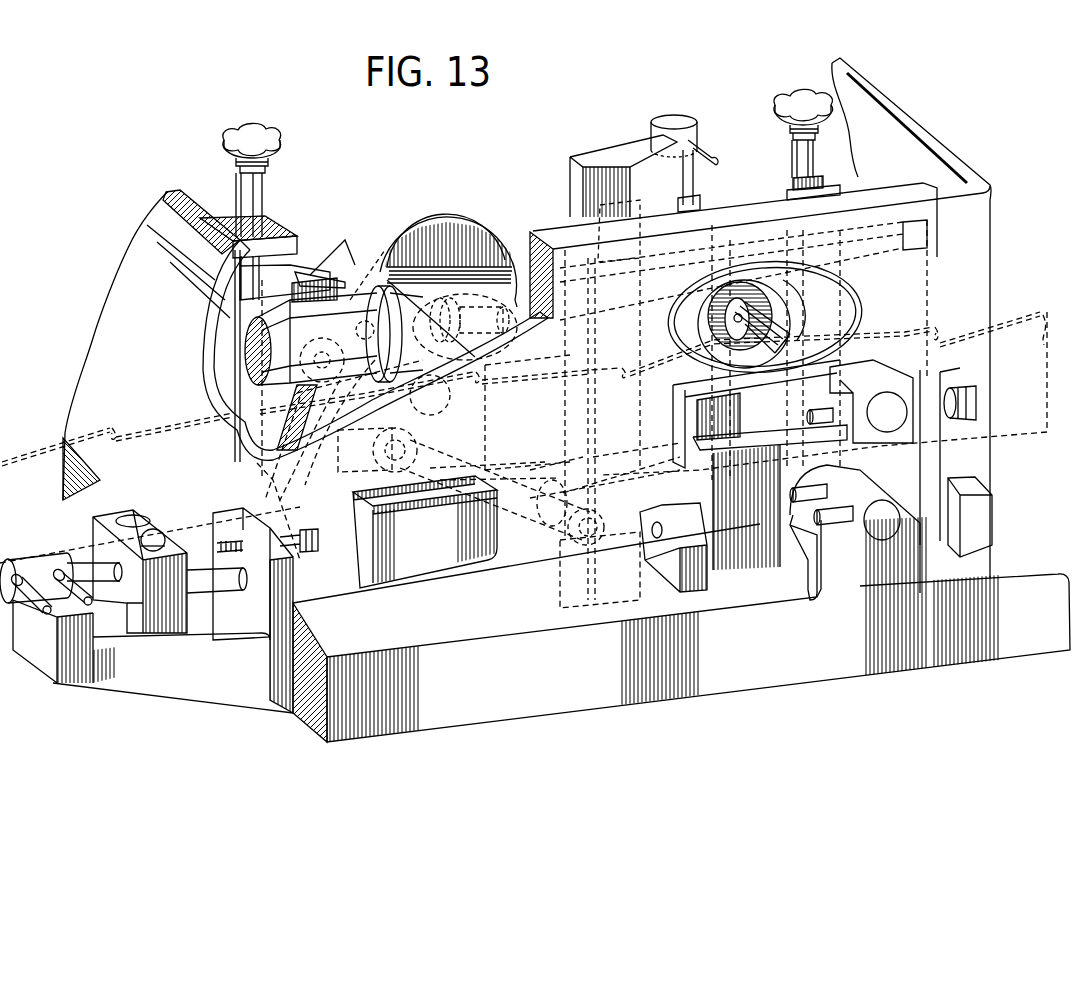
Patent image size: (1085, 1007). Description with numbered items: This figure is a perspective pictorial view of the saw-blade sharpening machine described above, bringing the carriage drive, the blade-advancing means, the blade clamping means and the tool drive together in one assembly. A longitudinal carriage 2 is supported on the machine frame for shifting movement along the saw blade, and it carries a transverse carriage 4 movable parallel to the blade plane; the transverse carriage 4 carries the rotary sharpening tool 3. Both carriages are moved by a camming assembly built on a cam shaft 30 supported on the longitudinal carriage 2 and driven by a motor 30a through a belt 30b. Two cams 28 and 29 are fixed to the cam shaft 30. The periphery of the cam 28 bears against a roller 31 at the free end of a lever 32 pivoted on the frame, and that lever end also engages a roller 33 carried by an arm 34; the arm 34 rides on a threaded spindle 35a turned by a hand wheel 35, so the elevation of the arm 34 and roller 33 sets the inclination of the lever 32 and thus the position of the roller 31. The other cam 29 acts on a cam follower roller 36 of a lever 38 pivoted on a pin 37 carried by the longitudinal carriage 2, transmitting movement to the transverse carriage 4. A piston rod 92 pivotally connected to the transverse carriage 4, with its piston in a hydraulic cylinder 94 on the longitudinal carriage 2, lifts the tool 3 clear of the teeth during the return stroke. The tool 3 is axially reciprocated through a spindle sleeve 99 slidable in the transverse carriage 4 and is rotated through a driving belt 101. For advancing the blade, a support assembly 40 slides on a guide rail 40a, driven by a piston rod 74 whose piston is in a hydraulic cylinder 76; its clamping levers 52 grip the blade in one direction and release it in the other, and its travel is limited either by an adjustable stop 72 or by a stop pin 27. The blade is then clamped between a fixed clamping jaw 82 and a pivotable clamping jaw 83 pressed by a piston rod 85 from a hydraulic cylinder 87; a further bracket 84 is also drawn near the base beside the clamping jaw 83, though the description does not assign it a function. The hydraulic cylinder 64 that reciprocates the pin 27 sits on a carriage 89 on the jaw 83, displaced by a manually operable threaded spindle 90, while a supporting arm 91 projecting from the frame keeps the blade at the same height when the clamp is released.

The longitudinal carriage 2 is at (862, 225).
The rotary sharpening tool 3 is at (790, 330).
The transverse carriage 4 is at (738, 212).
The stop pin 27 is at (860, 318).
The cam 28 is at (455, 240).
The cam 29 is at (450, 299).
The cam shaft 30 is at (500, 342).
The motor 30a is at (280, 350).
The belt 30b is at (490, 393).
The roller 31 is at (365, 265).
The lever 32 is at (255, 458).
The roller 33 is at (332, 282).
The arm 34 is at (285, 290).
The hand wheel 35 is at (228, 142).
The threaded spindle 35a is at (245, 202).
The cam follower roller 36 is at (372, 452).
The pin 37 is at (565, 547).
The lever 38 is at (498, 508).
The support assembly 40 is at (158, 612).
The guide rail 40a is at (208, 593).
The clamping levers 52 is at (152, 527).
The hydraulic cylinder 64 is at (888, 418).
The stop 72 is at (222, 540).
The piston rod 74 is at (90, 568).
The hydraulic cylinder 76 is at (40, 565).
The clamping jaw 82 is at (908, 356).
The clamping jaw 83 is at (680, 412).
The bracket 84 is at (650, 538).
The piston rod 85 is at (800, 472).
The hydraulic cylinder 87 is at (892, 515).
The carriage 89 is at (870, 435).
The threaded spindle 90 is at (810, 414).
The supporting arm 91 is at (446, 544).
The piston rod 92 is at (698, 200).
The hydraulic cylinder 94 is at (660, 135).
The spindle sleeve 99 is at (735, 325).
The driving belt 101 is at (600, 206).